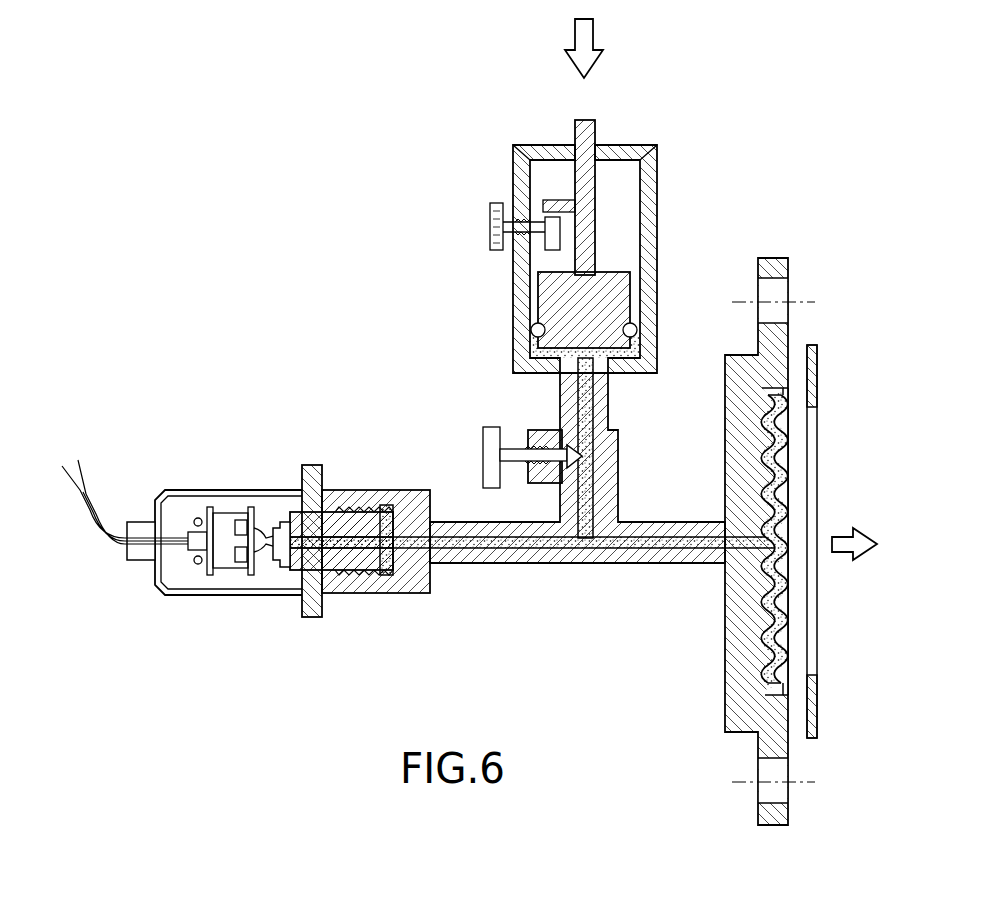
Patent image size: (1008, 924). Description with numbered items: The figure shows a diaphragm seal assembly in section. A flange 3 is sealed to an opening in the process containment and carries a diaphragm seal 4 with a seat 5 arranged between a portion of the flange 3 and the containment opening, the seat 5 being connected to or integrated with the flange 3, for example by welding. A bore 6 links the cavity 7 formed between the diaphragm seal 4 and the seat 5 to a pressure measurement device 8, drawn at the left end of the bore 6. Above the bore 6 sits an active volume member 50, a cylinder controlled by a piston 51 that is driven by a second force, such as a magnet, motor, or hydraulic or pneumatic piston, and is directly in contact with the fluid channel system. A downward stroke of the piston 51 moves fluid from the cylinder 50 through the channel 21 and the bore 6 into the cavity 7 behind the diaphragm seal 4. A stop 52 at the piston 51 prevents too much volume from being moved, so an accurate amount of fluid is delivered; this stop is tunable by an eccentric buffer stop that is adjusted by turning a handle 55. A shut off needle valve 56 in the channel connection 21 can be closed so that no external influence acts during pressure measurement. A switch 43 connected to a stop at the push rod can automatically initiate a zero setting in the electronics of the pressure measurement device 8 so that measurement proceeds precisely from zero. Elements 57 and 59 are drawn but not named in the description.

The flange 3 is at (752, 706).
The diaphragm seal 4 is at (793, 563).
The seat 5 is at (762, 603).
The bore 6 is at (620, 548).
The cavity 7 is at (778, 632).
The pressure measurement device 8 is at (255, 627).
The channel 21 is at (590, 397).
The switch 43 is at (567, 440).
The active volume member 50 is at (647, 204).
The piston 51 is at (605, 300).
The stop 52 is at (560, 200).
The handle 55 is at (490, 222).
The shut off needle valve 56 is at (483, 447).
The needle / plate 57 is at (590, 455).
The nut 59 is at (548, 245).